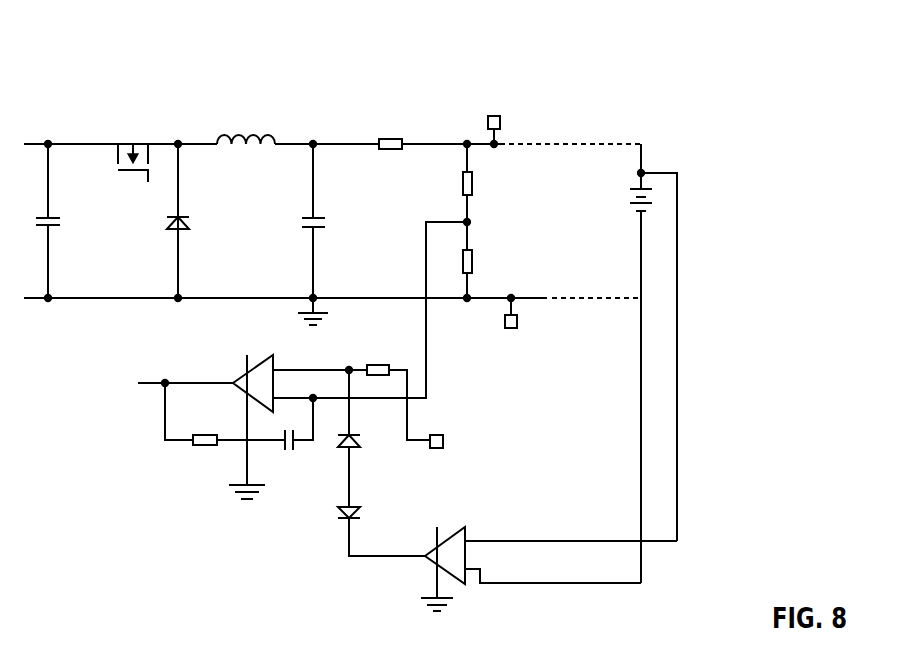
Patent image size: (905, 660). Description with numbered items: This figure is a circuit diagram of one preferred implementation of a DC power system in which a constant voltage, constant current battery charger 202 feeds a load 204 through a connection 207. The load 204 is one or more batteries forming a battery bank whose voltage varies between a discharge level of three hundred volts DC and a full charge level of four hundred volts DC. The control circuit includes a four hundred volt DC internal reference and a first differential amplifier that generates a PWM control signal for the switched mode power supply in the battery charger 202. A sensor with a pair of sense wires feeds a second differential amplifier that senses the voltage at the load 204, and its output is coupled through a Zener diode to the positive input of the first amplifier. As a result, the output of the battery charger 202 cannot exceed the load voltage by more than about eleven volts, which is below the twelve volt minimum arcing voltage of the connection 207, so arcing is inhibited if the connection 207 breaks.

The constant voltage constant current battery charger 202 is at (280, 73).
The load 204 is at (763, 107).
The connection 207 is at (582, 143).